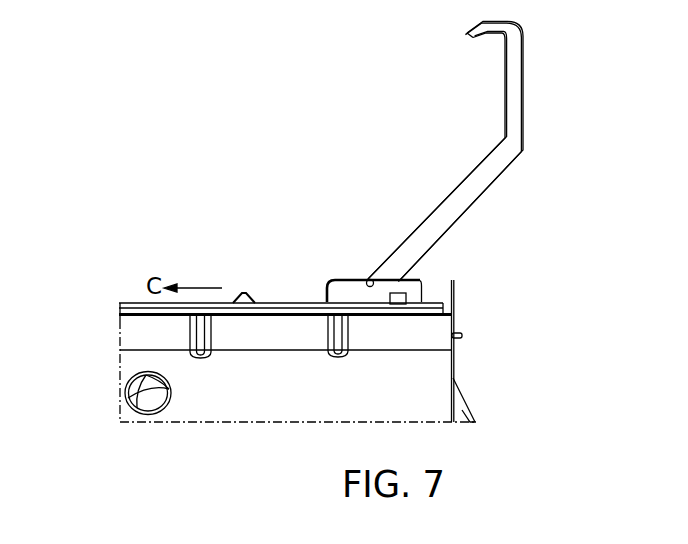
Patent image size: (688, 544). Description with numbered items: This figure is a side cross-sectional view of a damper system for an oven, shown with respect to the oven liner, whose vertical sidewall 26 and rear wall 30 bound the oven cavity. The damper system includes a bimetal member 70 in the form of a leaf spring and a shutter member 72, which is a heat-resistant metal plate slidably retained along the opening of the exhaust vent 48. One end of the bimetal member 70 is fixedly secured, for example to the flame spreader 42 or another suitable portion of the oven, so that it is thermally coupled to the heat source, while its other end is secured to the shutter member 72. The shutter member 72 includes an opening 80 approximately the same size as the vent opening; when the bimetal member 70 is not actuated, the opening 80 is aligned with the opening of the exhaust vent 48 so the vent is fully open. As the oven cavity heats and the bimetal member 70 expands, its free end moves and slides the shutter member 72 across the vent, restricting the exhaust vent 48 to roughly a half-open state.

The vertical sidewalls 26 is at (140, 336).
The rear wall 30 is at (452, 395).
The flame spreader 42 is at (263, 302).
The exhaust vent 48 is at (521, 29).
The bimetal member 70 is at (328, 287).
The shutter member 72 is at (420, 280).
The opening 80 is at (366, 279).